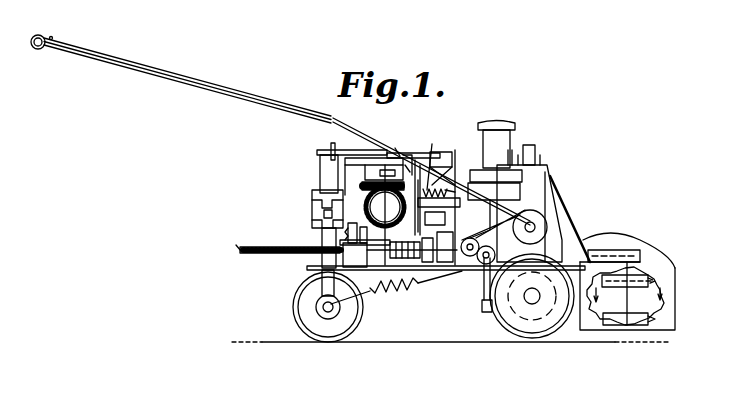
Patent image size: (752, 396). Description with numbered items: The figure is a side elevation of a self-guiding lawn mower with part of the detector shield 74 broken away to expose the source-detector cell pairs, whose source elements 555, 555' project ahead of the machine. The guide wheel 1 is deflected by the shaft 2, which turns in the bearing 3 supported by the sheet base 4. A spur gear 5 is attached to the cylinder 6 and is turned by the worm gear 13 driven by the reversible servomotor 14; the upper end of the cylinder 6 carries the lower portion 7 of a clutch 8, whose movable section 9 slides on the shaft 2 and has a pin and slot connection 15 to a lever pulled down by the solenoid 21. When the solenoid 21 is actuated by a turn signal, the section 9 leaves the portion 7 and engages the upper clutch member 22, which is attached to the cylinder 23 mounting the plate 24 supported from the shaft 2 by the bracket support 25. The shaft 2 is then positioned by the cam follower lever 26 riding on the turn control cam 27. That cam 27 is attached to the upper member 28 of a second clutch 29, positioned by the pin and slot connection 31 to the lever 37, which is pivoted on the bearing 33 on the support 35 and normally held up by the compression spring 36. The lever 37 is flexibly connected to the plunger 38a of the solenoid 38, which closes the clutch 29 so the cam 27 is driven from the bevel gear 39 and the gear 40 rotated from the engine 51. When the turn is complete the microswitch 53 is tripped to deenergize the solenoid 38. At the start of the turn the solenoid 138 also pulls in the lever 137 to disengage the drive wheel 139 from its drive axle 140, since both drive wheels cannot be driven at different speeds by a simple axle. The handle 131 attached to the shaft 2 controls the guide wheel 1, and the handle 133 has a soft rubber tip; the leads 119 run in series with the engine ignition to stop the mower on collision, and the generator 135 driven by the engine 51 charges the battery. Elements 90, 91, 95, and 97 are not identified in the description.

The guide wheel 1 is at (300, 318).
The shaft 2 is at (322, 297).
The bearing 3 is at (322, 254).
The sheet base 4 is at (318, 268).
The spur gear 5 is at (256, 249).
The cylinder 6 is at (322, 240).
The clutch portion 7 is at (320, 226).
The clutch 8 is at (298, 211).
The movable clutch section 9 is at (320, 215).
The worm gear 13 is at (406, 288).
The reversible servomotor 14 is at (442, 268).
The pin and slot connection 15 is at (350, 224).
The solenoid 21 is at (356, 267).
The upper clutch member 22 is at (312, 197).
The cylinder 23 is at (325, 172).
The plate 24 is at (320, 151).
The bracket support 25 is at (331, 150).
The cam follower lever 26 is at (398, 152).
The turn control cam 27 is at (408, 168).
The upper clutch member 28 is at (366, 160).
The clutch 29 is at (360, 150).
The pin and slot connection 31 is at (417, 170).
The bearing 33 is at (441, 152).
The support 35 is at (447, 162).
The compression spring 36 is at (447, 195).
The lever 37 is at (466, 205).
The solenoid 38 is at (446, 219).
The plunger 38a is at (430, 262).
The bevel gear 39 is at (366, 196).
The gear 40 is at (362, 186).
The engine 51 is at (550, 172).
The microswitch 53 is at (446, 188).
The shield 74 is at (641, 250).
The rear body 90 is at (604, 224).
The spring 91 is at (375, 294).
The wheel fork 95 is at (322, 273).
The bracket 97 is at (406, 155).
The leads 119 is at (575, 215).
The handle 131 is at (226, 86).
The handle 133 is at (35, 50).
The A.C. generator 135 is at (462, 268).
The lever 137 is at (485, 306).
The solenoid 138 is at (484, 285).
The drive wheel 139 is at (500, 322).
The drive axle 140 is at (536, 305).
The source element 555 is at (645, 262).
The source element 555' is at (659, 302).